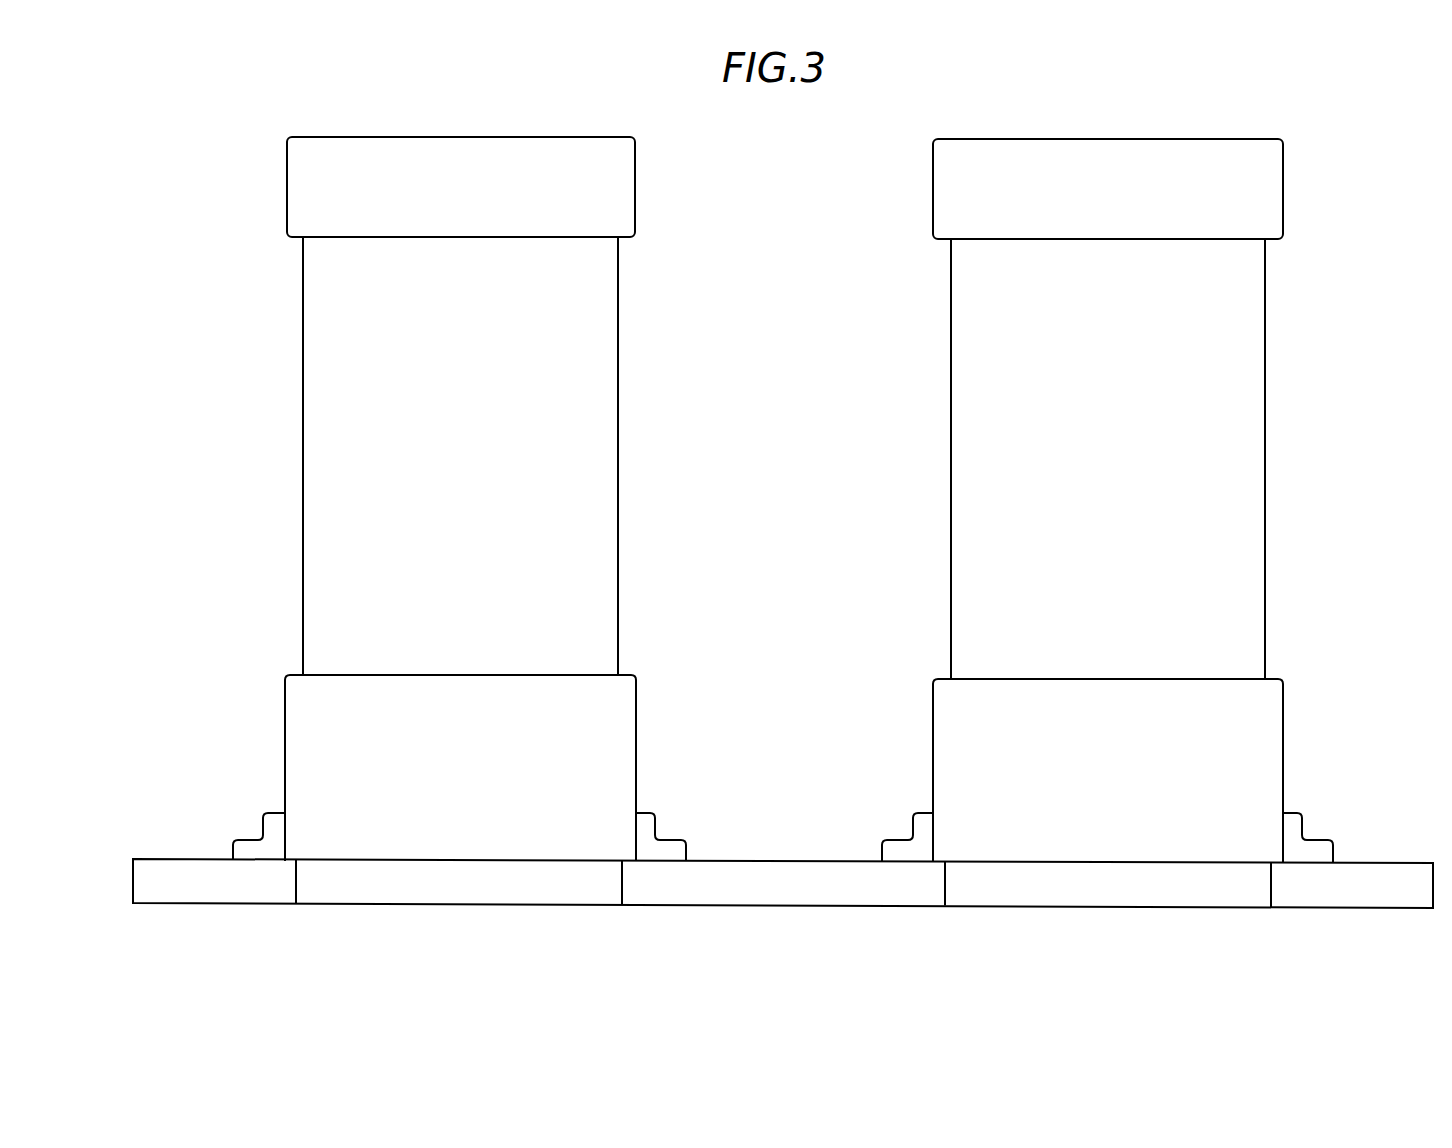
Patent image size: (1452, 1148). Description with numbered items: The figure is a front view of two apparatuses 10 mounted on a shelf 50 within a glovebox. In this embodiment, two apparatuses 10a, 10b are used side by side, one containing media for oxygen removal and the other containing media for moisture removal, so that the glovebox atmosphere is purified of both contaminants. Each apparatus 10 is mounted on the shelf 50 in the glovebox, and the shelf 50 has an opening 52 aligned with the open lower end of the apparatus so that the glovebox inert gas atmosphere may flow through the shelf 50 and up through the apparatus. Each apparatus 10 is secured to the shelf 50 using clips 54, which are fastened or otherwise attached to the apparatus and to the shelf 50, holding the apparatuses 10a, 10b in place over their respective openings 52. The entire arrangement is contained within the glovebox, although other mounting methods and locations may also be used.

The apparatus 10 is at (786, 499).
The first apparatus 10a is at (285, 469).
The second apparatus 10b is at (1284, 473).
The shelf 50 is at (1327, 892).
The opening 52 is at (355, 887).
The clips 54 is at (262, 835).